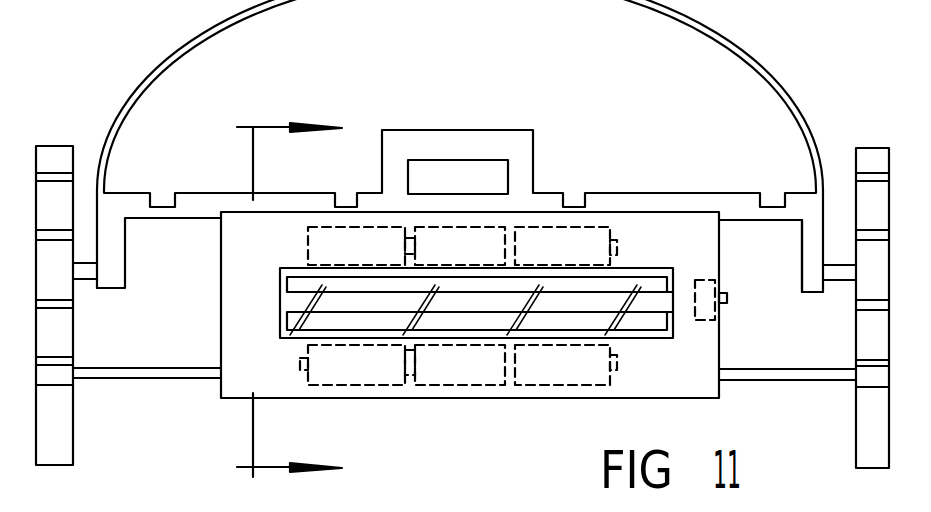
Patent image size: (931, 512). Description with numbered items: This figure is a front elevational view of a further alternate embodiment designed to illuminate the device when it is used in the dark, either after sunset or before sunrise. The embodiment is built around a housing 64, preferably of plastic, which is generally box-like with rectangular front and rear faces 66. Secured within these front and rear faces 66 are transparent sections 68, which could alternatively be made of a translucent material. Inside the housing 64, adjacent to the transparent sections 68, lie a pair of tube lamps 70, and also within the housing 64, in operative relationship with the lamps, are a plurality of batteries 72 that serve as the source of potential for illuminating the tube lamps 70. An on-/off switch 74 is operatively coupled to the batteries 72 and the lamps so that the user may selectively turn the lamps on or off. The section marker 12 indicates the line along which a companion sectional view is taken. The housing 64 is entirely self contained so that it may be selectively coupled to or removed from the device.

The section line 12- 12 is at (264, 300).
The housing 64 is at (632, 380).
The front and rear faces 66 is at (742, 373).
The transparent sections 68 is at (665, 305).
The tube lamps 70 is at (640, 320).
The batteries 72 is at (482, 235).
The on-/off switch 74 is at (771, 256).